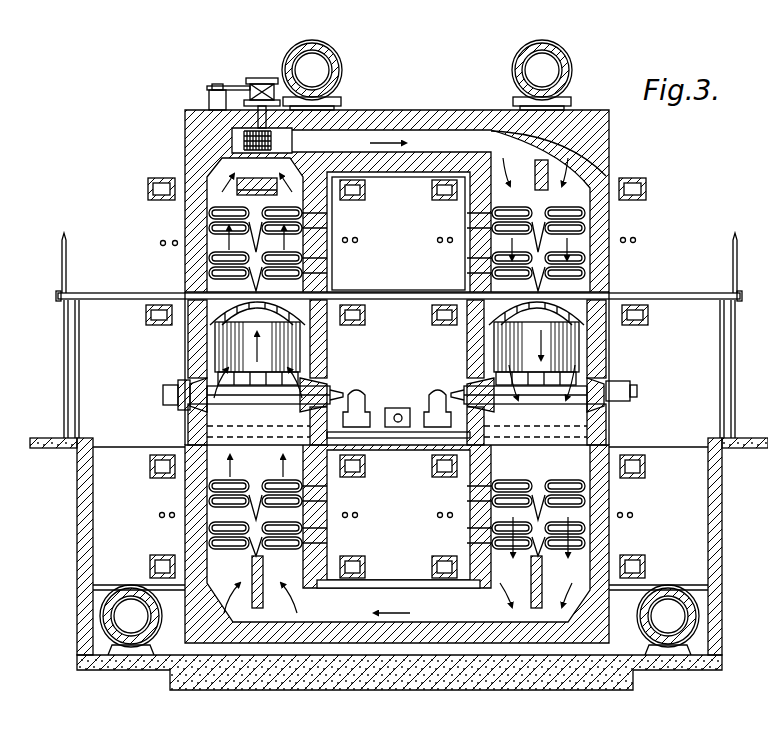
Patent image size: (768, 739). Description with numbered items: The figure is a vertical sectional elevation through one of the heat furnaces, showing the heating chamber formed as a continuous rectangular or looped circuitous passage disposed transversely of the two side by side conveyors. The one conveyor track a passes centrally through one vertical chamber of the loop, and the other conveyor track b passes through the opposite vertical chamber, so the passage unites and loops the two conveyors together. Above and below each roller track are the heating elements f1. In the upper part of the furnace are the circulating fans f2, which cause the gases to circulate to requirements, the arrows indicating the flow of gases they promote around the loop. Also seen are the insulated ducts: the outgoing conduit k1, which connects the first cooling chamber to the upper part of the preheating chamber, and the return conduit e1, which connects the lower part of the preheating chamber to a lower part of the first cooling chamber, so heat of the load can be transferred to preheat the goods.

The conduit k1 is at (337, 76).
The circulating fan f2 is at (232, 136).
The heating element f1 is at (207, 232).
The dynamo-electric machine (commutator) c is at (297, 343).
The conveyor track a is at (577, 386).
The conveyor track b is at (187, 412).
The conduit e1 is at (129, 603).